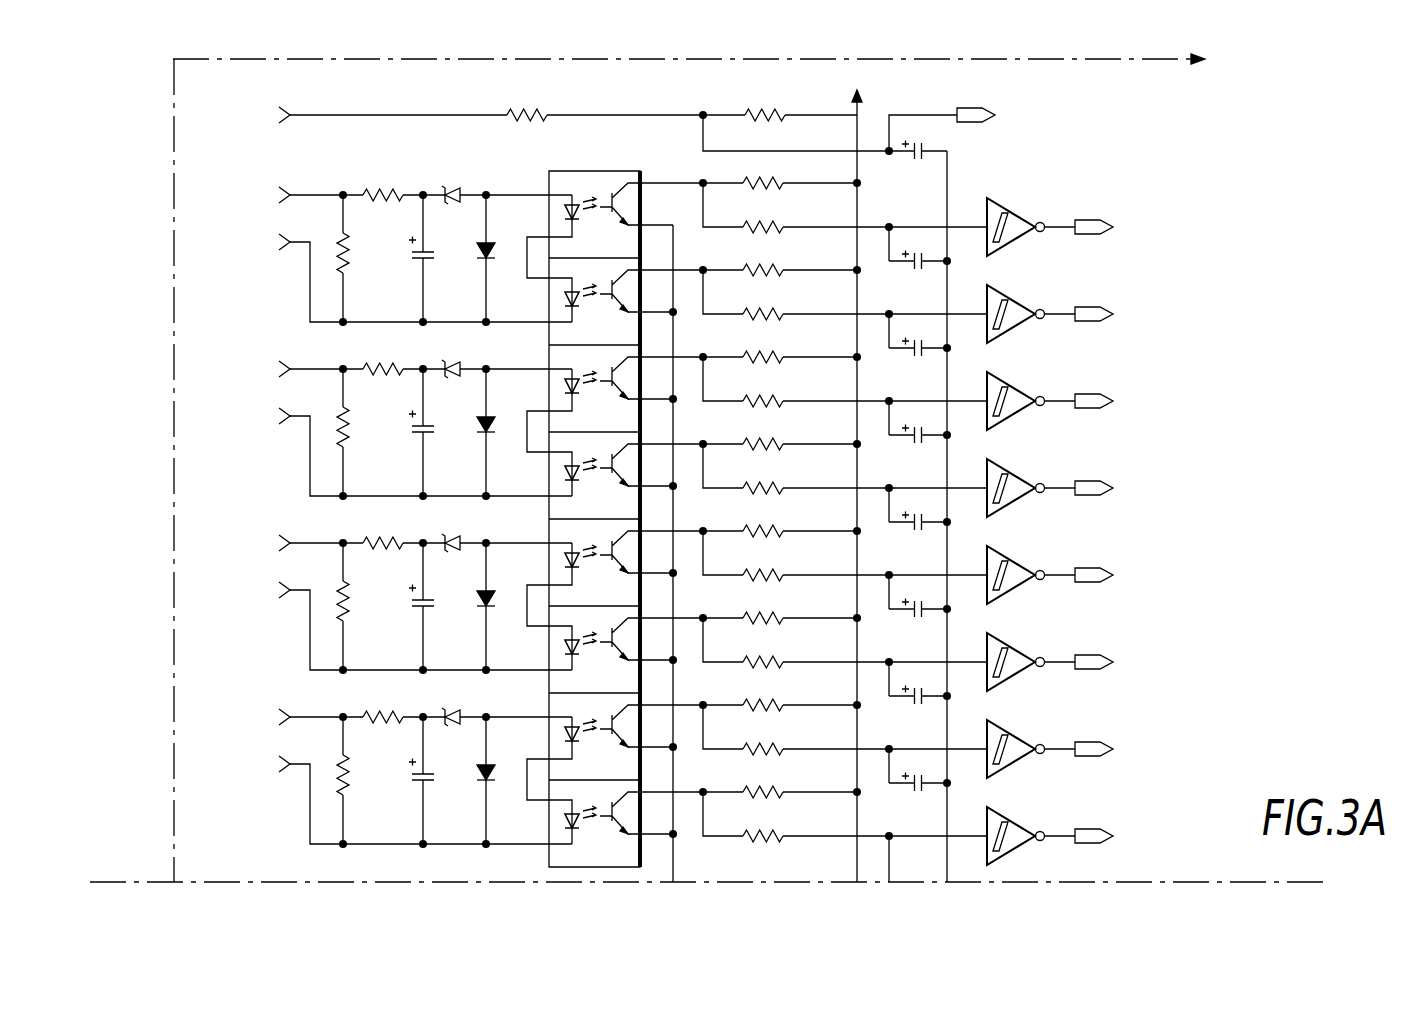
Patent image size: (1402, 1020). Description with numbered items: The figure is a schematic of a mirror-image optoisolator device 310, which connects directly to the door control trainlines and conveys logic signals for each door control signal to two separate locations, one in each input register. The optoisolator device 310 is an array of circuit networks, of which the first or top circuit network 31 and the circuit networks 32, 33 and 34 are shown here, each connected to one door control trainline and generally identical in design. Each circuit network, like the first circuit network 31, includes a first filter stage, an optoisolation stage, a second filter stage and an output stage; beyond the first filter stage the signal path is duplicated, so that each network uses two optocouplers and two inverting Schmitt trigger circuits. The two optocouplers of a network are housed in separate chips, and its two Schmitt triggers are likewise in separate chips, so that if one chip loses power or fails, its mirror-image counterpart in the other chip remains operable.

The mirror-image optoisolator device 310 is at (1223, 149).
The first circuit network 31 is at (162, 194).
The circuit network 32 is at (162, 367).
The circuit network 33 is at (162, 537).
The circuit network 34 is at (162, 710).